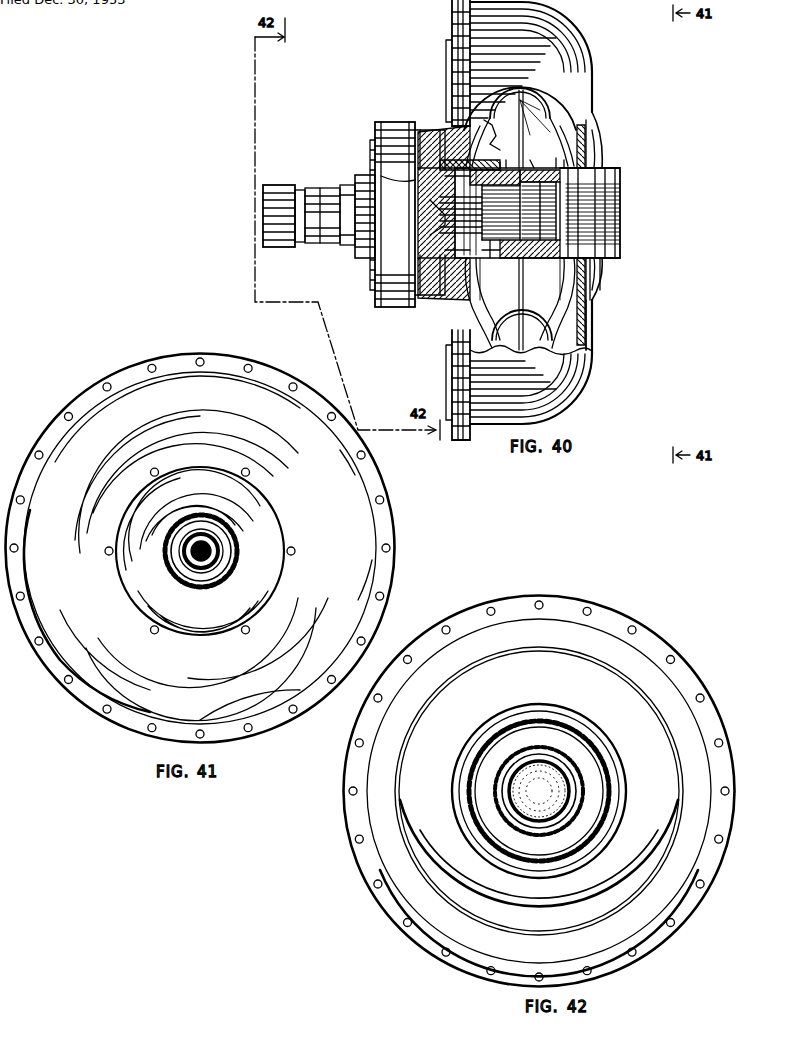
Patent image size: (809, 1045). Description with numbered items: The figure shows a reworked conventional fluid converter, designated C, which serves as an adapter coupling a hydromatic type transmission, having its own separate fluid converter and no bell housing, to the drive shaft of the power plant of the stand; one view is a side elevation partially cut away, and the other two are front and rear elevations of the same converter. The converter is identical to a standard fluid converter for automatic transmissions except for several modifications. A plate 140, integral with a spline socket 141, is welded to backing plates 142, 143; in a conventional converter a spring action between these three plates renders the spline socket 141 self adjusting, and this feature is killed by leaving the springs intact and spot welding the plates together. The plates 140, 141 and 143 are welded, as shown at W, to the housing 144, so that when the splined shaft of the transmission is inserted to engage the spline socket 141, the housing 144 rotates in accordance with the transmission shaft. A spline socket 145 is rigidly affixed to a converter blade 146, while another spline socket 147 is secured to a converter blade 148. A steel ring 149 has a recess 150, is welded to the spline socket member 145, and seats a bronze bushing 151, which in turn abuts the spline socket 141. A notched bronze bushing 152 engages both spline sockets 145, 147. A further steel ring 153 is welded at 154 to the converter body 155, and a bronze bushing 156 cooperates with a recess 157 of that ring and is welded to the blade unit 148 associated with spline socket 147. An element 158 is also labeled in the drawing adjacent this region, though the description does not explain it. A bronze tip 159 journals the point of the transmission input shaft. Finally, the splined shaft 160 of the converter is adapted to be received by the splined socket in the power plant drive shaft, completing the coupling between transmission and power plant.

In FIG. 40, the plate 140 is at (602, 140).
In FIG. 40, the spline socket 141 is at (606, 170).
In FIG. 40, the backing plate 142 is at (594, 116).
In FIG. 40, the backing plate 143 is at (606, 132).
In FIG. 40, the housing 144 is at (594, 60).
In FIG. 41, the housing 144 is at (360, 528).
In FIG. 42, the housing 144 is at (622, 656).
In FIG. 40, the spline socket 145 is at (614, 262).
In FIG. 40, the converter blade 146 is at (546, 135).
In FIG. 40, the spline socket 147 is at (484, 160).
In FIG. 40, the converter blade 148 is at (500, 135).
In FIG. 40, the steel ring 149 is at (543, 160).
In FIG. 40, the recess 150 is at (558, 155).
In FIG. 40, the bronze bushing 151 is at (571, 158).
In FIG. 40, the notched bronze bushing 152 is at (526, 96).
In FIG. 40, the steel ring 153 is at (462, 176).
In FIG. 40, the weld 154 is at (450, 192).
In FIG. 40, the converter body 155 is at (390, 128).
In FIG. 40, the bronze bushing 156 is at (502, 166).
In FIG. 40, the recess 157 is at (366, 176).
In FIG. 40, the bearing 158 is at (430, 212).
In FIG. 40, the bronze tip 159 is at (416, 236).
In FIG. 40, the splined shaft 160 is at (280, 188).
In FIG. 41, the splined shaft 160 is at (201, 551).
In FIG. 42, the splined shaft 160 is at (575, 795).
In FIG. 40, the weld W is at (592, 338).